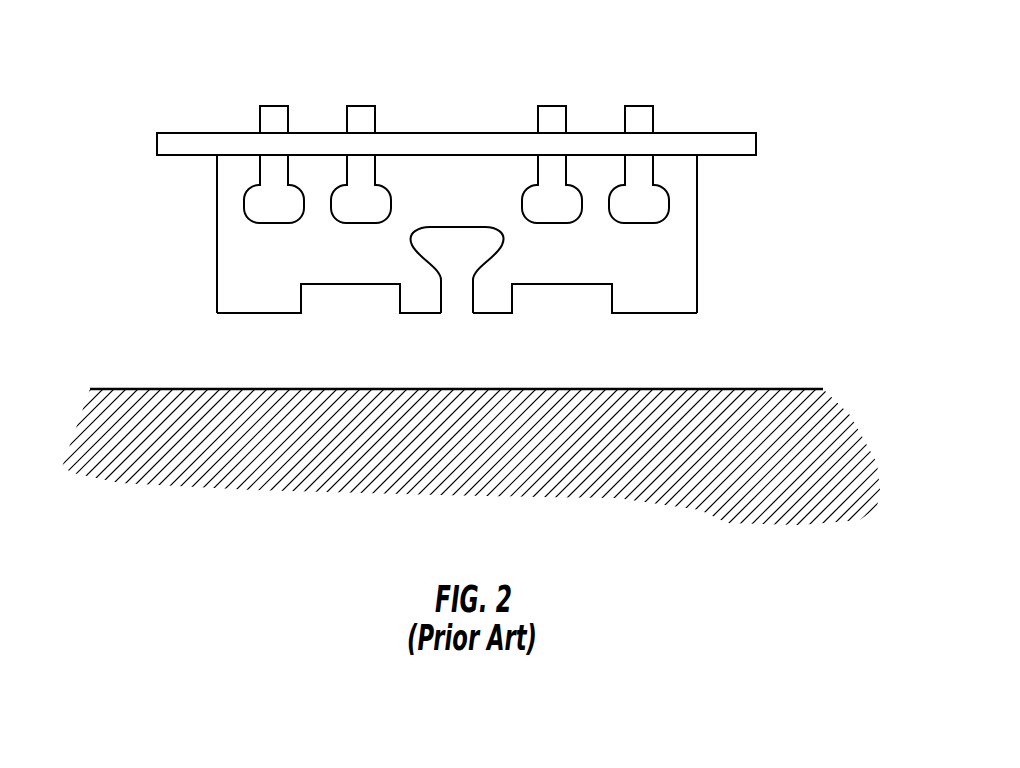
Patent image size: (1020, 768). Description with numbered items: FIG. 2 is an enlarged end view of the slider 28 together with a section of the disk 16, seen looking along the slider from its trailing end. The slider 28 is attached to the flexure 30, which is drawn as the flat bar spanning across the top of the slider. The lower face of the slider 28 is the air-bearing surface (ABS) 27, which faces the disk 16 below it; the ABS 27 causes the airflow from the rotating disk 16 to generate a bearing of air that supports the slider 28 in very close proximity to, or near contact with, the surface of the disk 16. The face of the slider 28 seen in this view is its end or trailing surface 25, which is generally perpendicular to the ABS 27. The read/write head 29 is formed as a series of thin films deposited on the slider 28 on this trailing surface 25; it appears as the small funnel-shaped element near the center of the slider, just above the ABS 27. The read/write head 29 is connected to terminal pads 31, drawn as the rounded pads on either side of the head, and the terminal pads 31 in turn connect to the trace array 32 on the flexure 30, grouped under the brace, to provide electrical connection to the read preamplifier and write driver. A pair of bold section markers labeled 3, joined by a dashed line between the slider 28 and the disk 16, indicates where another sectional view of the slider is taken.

The disk 16 is at (830, 423).
The trailing surface 25 is at (683, 272).
The air-bearing surface (ABS) 27 is at (237, 313).
The slider 28 is at (449, 254).
The read/write head 29 is at (457, 226).
The flexure 30 is at (756, 137).
The terminal pads 31 is at (348, 224).
The trace array 32 is at (655, 93).
The section line for FIG. 3 is at (563, 348).